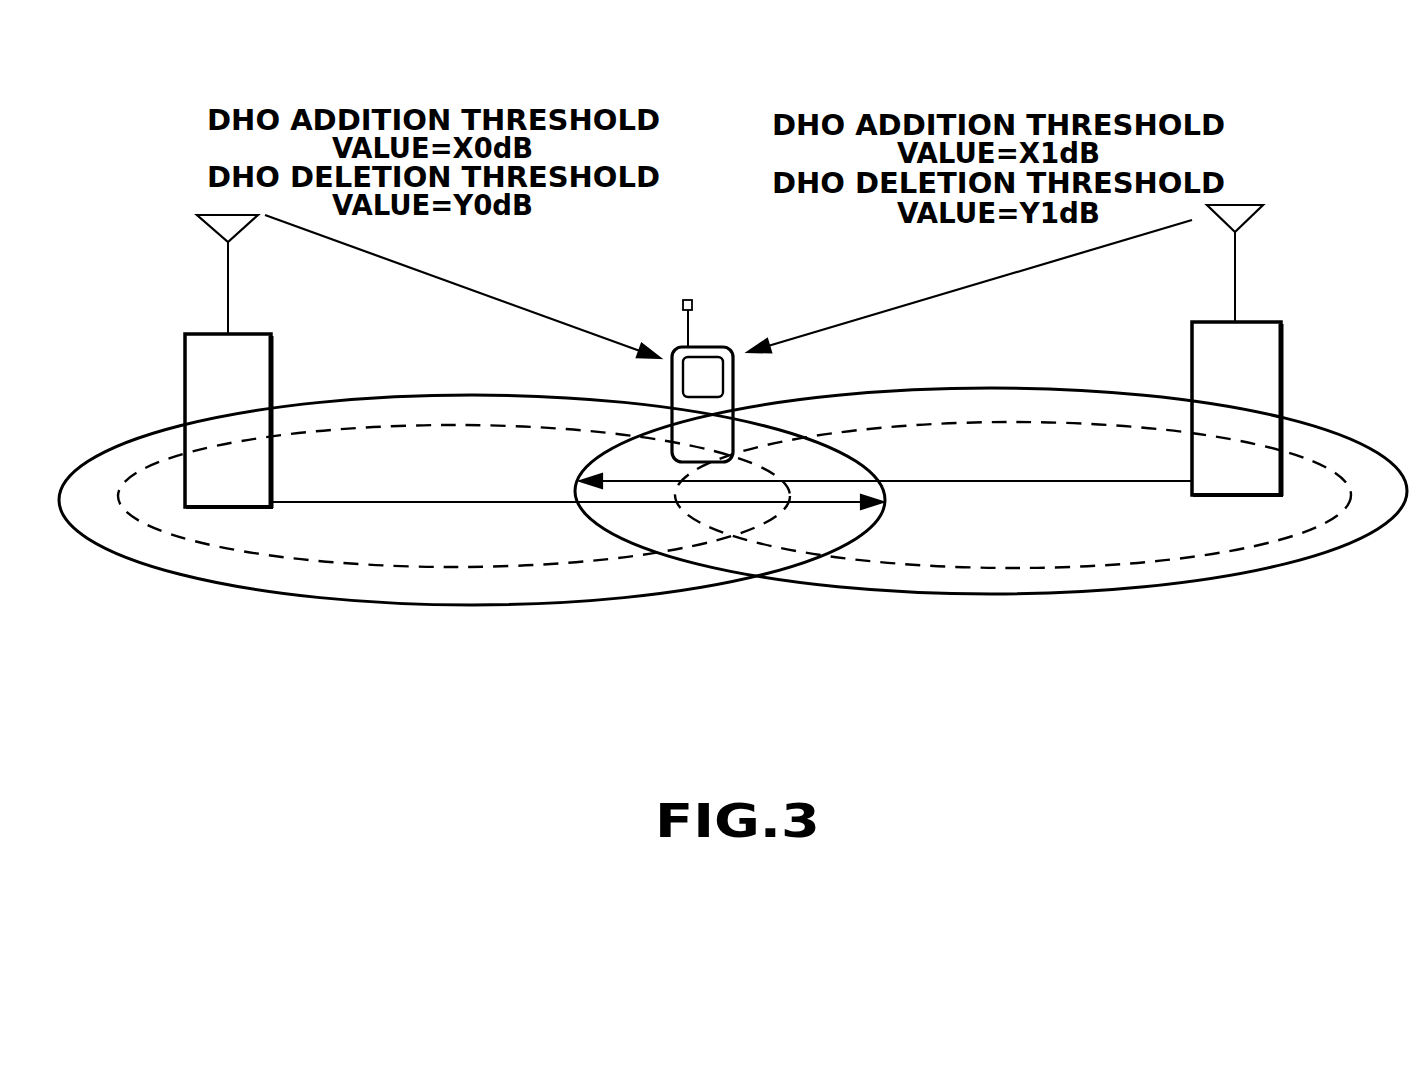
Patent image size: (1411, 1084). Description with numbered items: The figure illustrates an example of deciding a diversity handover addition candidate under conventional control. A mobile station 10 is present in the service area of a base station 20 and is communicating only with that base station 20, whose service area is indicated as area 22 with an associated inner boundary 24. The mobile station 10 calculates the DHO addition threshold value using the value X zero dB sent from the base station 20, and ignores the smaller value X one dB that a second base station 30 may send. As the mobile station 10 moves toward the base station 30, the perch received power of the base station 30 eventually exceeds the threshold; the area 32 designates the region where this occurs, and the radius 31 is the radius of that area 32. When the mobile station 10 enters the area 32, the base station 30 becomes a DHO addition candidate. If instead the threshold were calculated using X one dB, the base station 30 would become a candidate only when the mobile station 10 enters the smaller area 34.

The mobile station 10 is at (706, 347).
The base station 20 is at (230, 498).
The cell area of base station 20 22 is at (480, 395).
The DHO threshold boundary of base station 20 24 is at (548, 568).
The base station 30 is at (1212, 497).
The radius of the area 31 is at (990, 481).
The area 32 is at (1000, 388).
The area 34 is at (1023, 570).